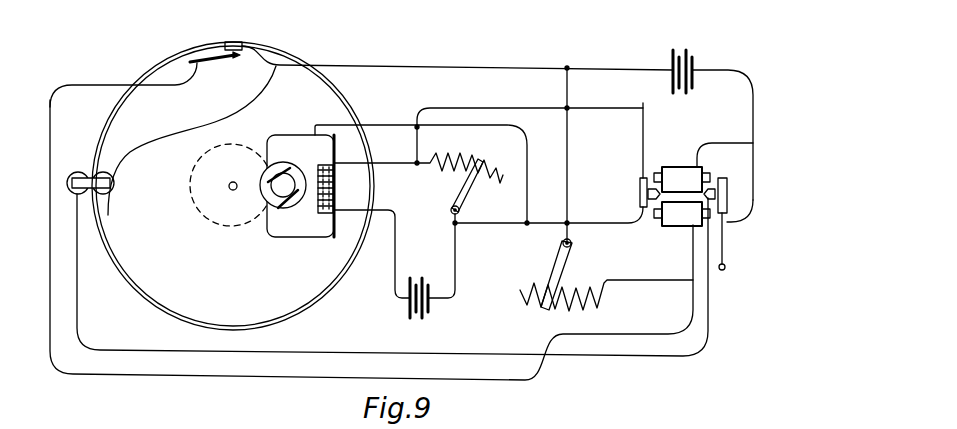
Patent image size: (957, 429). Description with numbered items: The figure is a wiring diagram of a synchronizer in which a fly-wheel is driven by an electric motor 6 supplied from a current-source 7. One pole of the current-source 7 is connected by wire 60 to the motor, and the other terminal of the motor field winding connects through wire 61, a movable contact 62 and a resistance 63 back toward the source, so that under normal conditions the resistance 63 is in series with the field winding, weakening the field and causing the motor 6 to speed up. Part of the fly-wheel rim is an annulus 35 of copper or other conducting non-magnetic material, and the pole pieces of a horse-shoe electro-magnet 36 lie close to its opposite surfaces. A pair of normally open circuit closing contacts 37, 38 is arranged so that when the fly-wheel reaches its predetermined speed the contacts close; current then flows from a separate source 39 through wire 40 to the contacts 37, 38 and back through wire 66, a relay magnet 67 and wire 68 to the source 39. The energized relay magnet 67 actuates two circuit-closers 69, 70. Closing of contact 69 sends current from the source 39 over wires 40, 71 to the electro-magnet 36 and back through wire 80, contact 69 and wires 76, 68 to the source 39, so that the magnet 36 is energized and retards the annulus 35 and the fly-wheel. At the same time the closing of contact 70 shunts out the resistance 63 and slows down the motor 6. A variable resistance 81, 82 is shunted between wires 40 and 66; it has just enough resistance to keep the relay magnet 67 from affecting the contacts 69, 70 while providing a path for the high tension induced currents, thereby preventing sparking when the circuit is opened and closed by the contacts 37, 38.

The electric motor 6 is at (293, 232).
The current-source 7 is at (407, 315).
The annulus 35 is at (158, 303).
The horse-shoe magnet 36 is at (108, 196).
The contact 37 is at (217, 66).
The contact 38 is at (232, 42).
The source 39 is at (683, 95).
The wire 40 is at (410, 58).
The wire 60 is at (397, 248).
The wire 61 is at (598, 111).
The movable contact 62 is at (455, 196).
The resistance 63 is at (489, 180).
The wire 66 is at (250, 376).
The relay magnet 67 is at (675, 224).
The wire 68 is at (730, 142).
The circuit-closer 69 is at (733, 172).
The circuit-closer 70 is at (629, 156).
The wire 71 is at (150, 137).
The wire 76 is at (752, 217).
The wire 80 is at (330, 348).
The variable resistance 81 is at (548, 188).
The variable resistance 82 is at (588, 310).